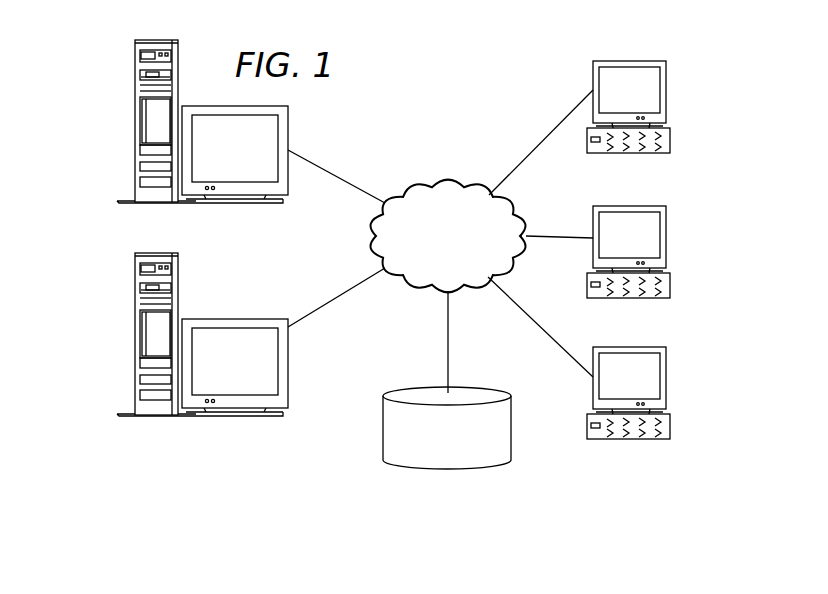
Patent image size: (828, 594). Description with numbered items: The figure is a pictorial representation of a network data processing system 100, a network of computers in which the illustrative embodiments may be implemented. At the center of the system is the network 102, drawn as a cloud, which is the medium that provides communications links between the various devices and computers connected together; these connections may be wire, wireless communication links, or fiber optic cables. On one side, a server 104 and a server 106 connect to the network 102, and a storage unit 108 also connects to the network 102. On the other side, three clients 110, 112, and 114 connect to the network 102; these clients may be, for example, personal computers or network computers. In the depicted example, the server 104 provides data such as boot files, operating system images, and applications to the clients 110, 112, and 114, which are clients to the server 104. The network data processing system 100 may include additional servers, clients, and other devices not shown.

The network data processing system 100 is at (497, 72).
The network 102 is at (420, 188).
The server 104 is at (135, 122).
The server 106 is at (135, 335).
The storage unit 108 is at (432, 470).
The client 110 is at (666, 92).
The client 112 is at (666, 237).
The client 114 is at (666, 380).